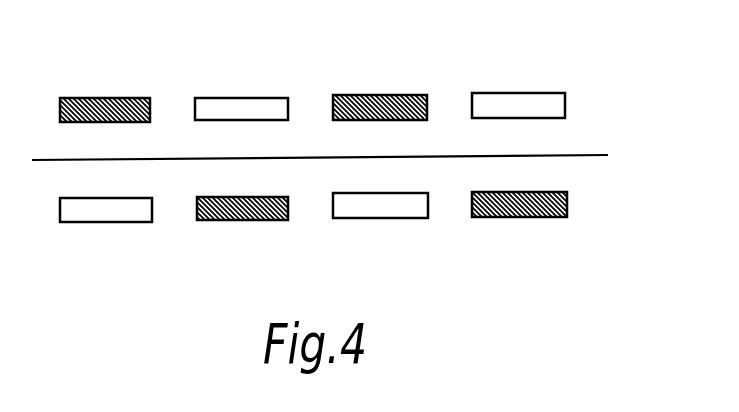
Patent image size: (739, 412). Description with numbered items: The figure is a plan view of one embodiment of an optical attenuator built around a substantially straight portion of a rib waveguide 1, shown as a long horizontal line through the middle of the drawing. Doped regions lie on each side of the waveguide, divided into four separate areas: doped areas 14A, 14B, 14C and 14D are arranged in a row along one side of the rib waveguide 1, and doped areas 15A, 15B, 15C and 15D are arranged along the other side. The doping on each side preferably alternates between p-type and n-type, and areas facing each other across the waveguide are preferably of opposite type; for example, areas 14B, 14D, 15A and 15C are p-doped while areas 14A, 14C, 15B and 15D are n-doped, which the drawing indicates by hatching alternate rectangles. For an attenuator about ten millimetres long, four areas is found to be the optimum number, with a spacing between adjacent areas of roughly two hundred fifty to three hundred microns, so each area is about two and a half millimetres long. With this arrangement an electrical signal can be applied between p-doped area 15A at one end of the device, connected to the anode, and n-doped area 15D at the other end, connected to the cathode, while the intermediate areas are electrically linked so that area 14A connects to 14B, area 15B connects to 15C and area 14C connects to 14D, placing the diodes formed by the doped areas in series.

The rib waveguide 1 is at (592, 155).
The doped area 14A is at (104, 97).
The doped area 14B is at (240, 97).
The doped area 14C is at (380, 94).
The doped area 14D is at (519, 92).
The doped area 15A is at (102, 223).
The doped area 15B is at (240, 221).
The doped area 15C is at (380, 219).
The doped area 15D is at (517, 218).